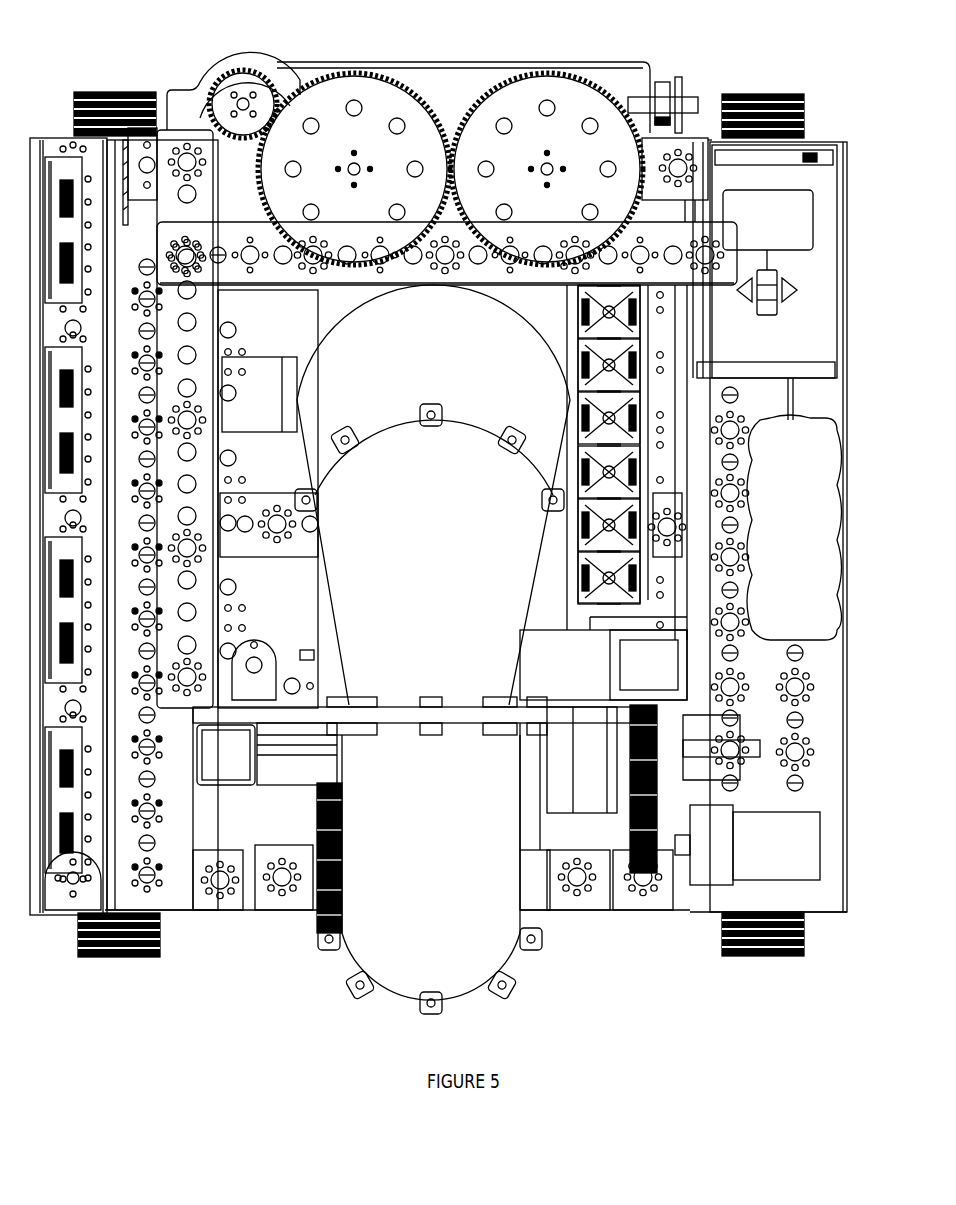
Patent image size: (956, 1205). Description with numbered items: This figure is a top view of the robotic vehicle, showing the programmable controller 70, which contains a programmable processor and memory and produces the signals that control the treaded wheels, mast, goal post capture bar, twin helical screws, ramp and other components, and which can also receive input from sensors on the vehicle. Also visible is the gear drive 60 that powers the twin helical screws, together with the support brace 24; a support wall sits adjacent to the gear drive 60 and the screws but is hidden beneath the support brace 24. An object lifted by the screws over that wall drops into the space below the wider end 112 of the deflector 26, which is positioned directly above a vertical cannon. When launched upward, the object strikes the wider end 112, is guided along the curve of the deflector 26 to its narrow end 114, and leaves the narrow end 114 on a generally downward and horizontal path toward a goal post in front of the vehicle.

The gear drive 60 is at (393, 83).
The support brace 24 is at (660, 233).
The programmable controller 70 is at (802, 177).
The wider end 112 is at (432, 495).
The narrow end 114 is at (430, 874).
The deflector 26 is at (458, 675).